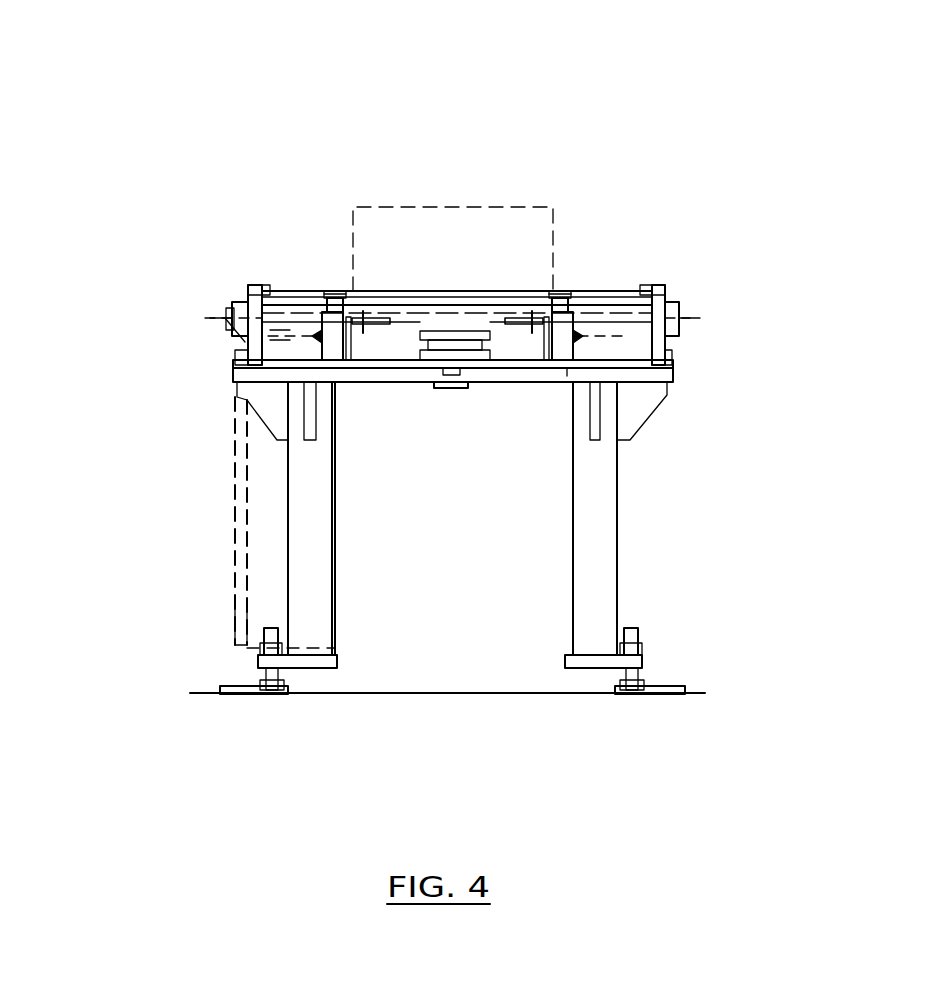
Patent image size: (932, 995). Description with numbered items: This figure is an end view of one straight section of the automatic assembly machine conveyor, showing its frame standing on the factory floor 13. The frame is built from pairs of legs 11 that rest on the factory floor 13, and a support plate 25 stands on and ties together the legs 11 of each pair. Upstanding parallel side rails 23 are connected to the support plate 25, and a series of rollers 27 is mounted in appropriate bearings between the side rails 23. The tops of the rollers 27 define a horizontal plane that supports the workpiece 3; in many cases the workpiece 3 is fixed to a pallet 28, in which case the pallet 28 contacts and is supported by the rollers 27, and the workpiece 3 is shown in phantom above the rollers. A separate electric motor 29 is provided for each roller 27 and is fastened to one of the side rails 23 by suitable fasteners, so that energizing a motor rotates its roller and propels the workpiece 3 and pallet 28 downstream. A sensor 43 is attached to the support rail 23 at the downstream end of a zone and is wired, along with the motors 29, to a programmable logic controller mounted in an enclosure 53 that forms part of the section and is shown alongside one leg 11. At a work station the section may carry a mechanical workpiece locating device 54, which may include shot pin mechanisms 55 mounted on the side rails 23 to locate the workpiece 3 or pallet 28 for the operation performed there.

The workpiece 3 is at (453, 207).
The legs 11 is at (600, 540).
The factory floor 13 is at (232, 690).
The side rails 23 is at (663, 290).
The support plate 25 is at (672, 362).
The rollers 27 is at (517, 307).
The pallet 28 is at (590, 285).
The electric motor 29 is at (228, 318).
The sensor 43 is at (285, 347).
The enclosure 53 is at (235, 432).
The workpiece locating device 54 is at (402, 388).
The shot pin mechanisms 55 is at (575, 352).